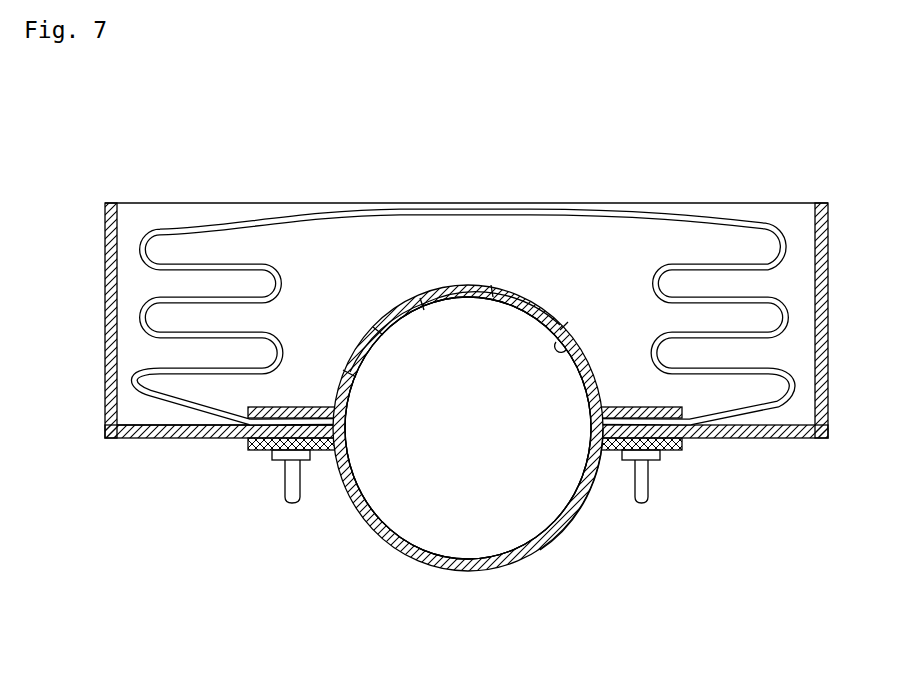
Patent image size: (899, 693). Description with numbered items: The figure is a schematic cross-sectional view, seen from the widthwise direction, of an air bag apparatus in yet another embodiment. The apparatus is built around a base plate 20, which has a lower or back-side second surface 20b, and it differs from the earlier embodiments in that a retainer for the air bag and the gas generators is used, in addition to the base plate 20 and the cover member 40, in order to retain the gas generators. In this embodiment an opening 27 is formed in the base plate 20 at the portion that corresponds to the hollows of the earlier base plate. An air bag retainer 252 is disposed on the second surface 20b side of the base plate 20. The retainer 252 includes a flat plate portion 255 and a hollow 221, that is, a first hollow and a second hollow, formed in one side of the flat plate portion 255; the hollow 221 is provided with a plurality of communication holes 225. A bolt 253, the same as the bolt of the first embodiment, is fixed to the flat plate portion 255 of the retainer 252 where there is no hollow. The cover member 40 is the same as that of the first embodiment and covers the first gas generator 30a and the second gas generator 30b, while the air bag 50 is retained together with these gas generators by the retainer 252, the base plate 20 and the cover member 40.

The base plate 20 is at (781, 450).
The second surface 20b is at (131, 424).
The air bag 50 is at (519, 205).
The cover member 40 is at (437, 580).
The opening 27 is at (588, 433).
The air bag retainer 252 is at (380, 304).
The communication holes 225 is at (505, 300).
The hollow 221 is at (570, 348).
The flat plate portion 255 is at (265, 447).
The bolt 253 is at (291, 504).
The first gas generator 30a is at (527, 434).
The second gas generator 30b is at (468, 428).